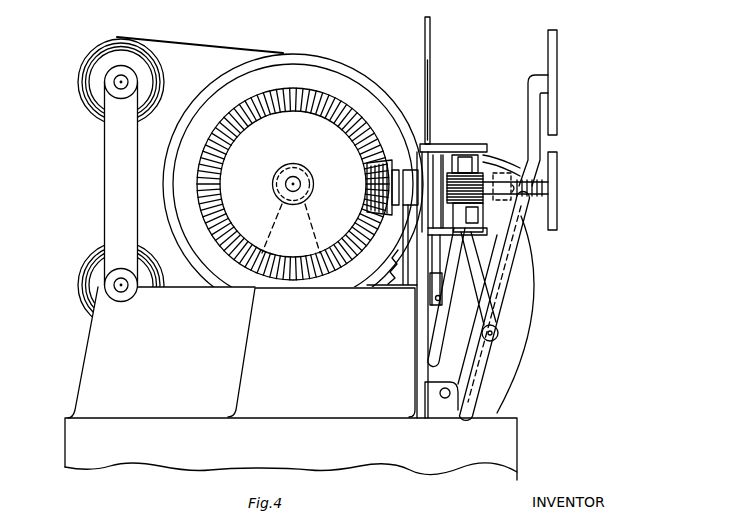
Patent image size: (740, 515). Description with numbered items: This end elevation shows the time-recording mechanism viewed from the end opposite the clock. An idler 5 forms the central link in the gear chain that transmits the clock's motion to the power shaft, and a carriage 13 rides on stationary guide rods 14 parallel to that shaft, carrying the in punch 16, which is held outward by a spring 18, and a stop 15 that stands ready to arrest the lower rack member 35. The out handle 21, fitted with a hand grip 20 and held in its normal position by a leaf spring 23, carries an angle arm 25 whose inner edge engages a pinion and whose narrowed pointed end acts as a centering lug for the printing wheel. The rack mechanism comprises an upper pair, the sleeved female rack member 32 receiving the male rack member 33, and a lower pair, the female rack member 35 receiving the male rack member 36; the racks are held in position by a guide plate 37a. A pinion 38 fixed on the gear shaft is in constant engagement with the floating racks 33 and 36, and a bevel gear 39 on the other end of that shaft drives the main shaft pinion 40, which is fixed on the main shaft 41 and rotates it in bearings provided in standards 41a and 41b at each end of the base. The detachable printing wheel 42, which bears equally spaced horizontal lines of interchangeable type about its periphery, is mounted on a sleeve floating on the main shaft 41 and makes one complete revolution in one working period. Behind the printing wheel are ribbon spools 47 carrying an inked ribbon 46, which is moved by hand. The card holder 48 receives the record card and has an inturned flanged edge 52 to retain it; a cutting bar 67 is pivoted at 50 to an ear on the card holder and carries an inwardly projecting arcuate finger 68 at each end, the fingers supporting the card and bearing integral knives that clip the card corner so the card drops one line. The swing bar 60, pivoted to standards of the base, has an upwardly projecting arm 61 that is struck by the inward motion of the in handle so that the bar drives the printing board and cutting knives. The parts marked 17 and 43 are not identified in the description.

The idler 5 is at (395, 272).
The carriage 13 is at (498, 333).
The guide rods 14 is at (440, 394).
The stop 15 is at (495, 222).
The in punch 16 is at (540, 198).
The plate 17 is at (559, 168).
The spring 18 is at (546, 190).
The hand grip 20 is at (558, 52).
The out handle 21 is at (527, 105).
The leaf spring 23 is at (433, 360).
The angle arm 25 is at (498, 158).
The upper female rack member 32 is at (473, 156).
The upper male rack member 33 is at (455, 157).
The lower female rack member 35 is at (454, 235).
The lower male rack member 36 is at (477, 308).
The guide plate 37a is at (437, 142).
The pinion 38 is at (490, 201).
The bevel gear 39 is at (366, 178).
The main shaft pinion 40 is at (286, 83).
The main shaft 41 is at (285, 184).
The standard 41a is at (321, 352).
The standard 41b is at (161, 352).
The printing wheel 42 is at (323, 73).
The wheel flange 43 is at (379, 57).
The inked ribbon 46 is at (225, 38).
The ribbon spools 47 is at (97, 77).
The card holder 48 is at (433, 72).
The pivot 50 is at (409, 169).
The inturned flanged edge 52 is at (432, 34).
The swing bar 60 is at (498, 336).
The arm 61 is at (527, 230).
The cutting bar 67 is at (443, 298).
The arcuate finger 68 is at (430, 300).